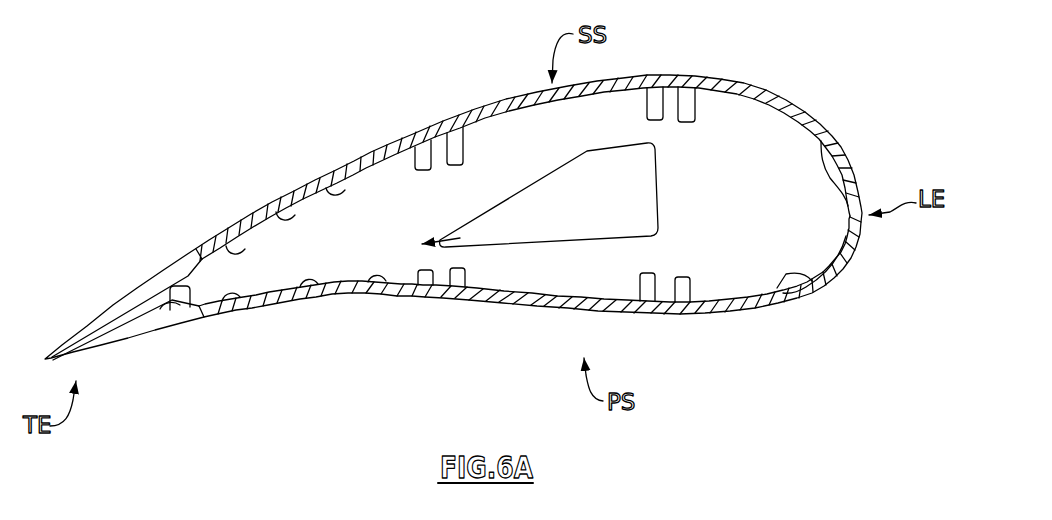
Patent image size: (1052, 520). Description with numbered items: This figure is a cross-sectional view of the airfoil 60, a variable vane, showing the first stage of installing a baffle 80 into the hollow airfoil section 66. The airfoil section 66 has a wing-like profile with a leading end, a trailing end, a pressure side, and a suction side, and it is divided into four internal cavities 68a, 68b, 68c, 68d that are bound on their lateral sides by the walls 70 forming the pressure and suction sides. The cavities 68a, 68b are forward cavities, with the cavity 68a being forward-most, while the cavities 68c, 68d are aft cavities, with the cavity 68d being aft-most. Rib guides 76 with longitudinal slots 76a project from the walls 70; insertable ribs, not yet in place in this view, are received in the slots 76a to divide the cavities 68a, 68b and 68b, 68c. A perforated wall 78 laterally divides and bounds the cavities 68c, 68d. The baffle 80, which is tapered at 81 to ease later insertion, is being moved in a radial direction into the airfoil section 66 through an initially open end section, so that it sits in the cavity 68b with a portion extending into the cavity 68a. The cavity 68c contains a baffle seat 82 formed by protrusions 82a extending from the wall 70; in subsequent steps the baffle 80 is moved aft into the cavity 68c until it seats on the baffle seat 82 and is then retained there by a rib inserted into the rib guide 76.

The airfoil 60 is at (455, 272).
The airfoil section 66 is at (802, 99).
The internal cavity 68a is at (758, 215).
The internal cavity 68b is at (585, 287).
The internal cavity 68c is at (350, 258).
The internal cavity 68d is at (133, 314).
The wall 70 is at (455, 208).
The rib guide 76 is at (585, 200).
The longitudinal slot 76a is at (434, 172).
The perforated wall 78 is at (160, 309).
The baffle 80 is at (540, 178).
The taper 81 is at (517, 186).
The baffle seat 82 is at (269, 243).
The protrusion 82a is at (333, 190).